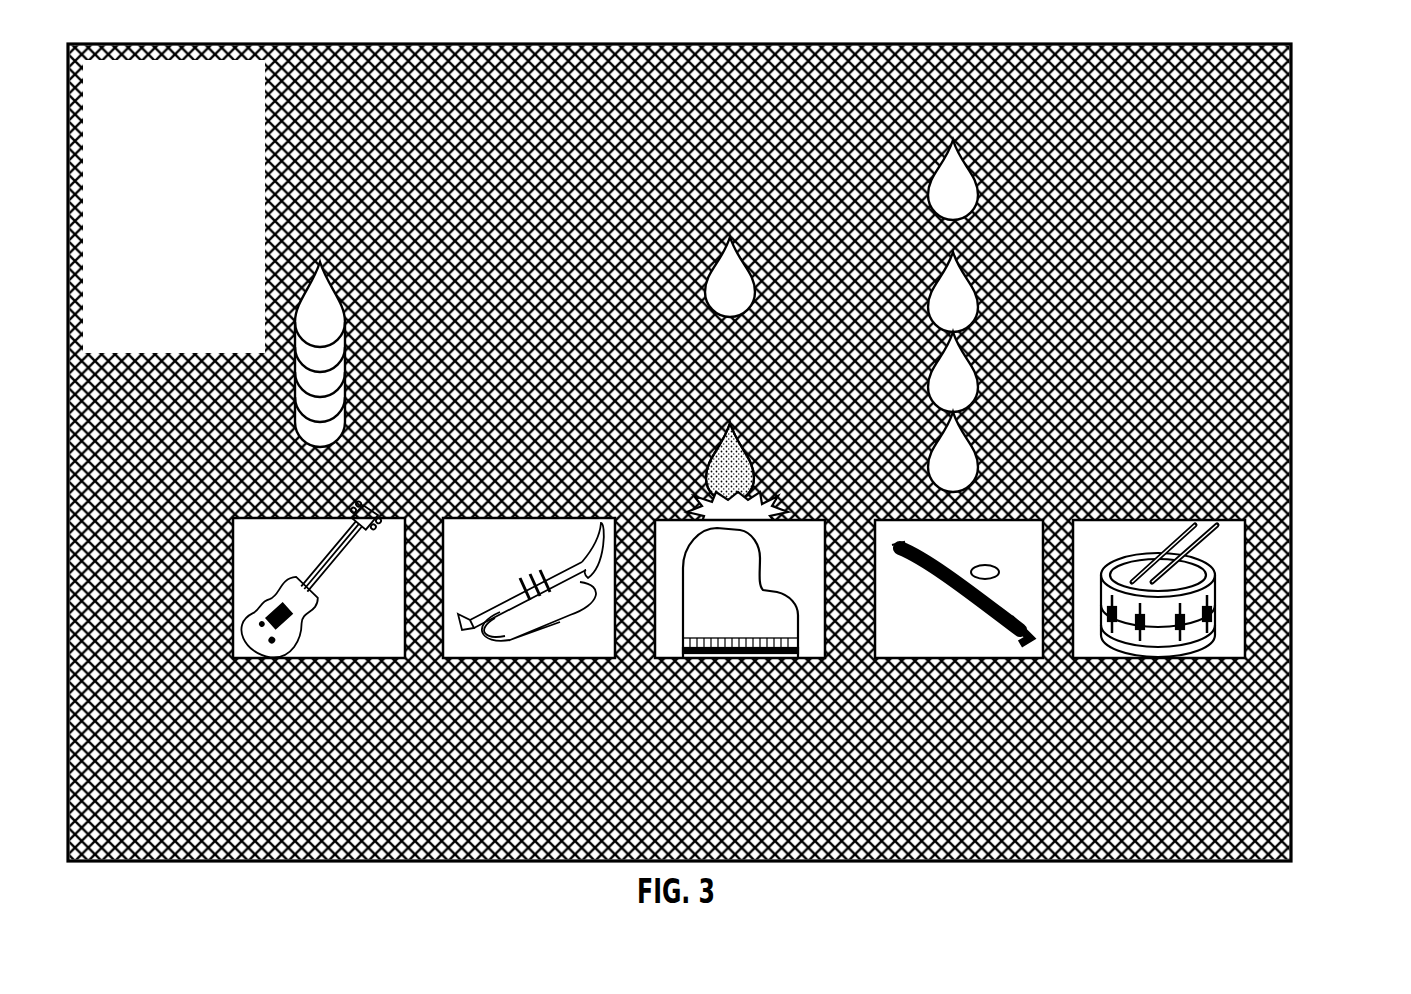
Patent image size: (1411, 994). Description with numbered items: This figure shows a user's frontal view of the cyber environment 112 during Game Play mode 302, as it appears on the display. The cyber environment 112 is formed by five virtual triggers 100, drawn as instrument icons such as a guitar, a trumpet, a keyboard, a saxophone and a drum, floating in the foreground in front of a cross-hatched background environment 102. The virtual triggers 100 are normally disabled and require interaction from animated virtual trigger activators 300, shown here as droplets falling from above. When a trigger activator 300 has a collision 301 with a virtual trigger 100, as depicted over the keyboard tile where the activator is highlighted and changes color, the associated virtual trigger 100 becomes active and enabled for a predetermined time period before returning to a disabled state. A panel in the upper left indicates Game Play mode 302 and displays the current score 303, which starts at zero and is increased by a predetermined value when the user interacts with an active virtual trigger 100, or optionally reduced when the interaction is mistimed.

The virtual trigger 100 is at (320, 662).
The background environment 102 is at (1277, 353).
The cyber environment 112 is at (1292, 180).
The animated virtual trigger activator 300 is at (320, 260).
The collision 301 is at (705, 480).
The Game Play mode 302 is at (178, 117).
The score 303 is at (142, 258).